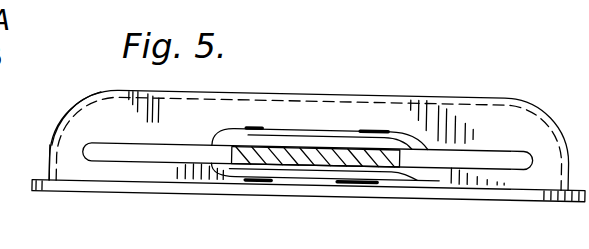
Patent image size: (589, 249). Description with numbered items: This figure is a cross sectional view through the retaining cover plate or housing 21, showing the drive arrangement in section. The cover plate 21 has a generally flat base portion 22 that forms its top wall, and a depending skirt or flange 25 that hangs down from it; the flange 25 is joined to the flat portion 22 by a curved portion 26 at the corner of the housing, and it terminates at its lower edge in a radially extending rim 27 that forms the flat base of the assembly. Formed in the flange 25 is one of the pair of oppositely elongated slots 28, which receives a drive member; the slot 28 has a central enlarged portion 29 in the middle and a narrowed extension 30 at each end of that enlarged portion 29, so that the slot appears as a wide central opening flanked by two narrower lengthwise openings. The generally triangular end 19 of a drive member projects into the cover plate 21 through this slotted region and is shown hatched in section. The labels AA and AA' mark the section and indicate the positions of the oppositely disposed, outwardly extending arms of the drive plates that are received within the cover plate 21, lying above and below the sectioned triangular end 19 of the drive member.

The generally triangular end 19 is at (310, 160).
The cover plate 21 is at (535, 50).
The flat base portion 22 is at (358, 50).
The flange 25 is at (49, 147).
The curved portion 26 is at (61, 122).
The radially extending rim 27 is at (42, 189).
The elongated slot 28 is at (437, 141).
The central enlarged portion 29 is at (380, 176).
The narrowed extension 30 is at (143, 160).
The section line A-A AA is at (290, 77).
The section line A-A' AA' is at (258, 207).